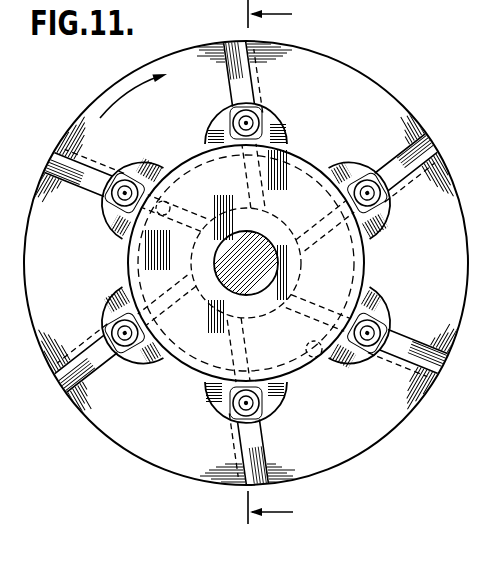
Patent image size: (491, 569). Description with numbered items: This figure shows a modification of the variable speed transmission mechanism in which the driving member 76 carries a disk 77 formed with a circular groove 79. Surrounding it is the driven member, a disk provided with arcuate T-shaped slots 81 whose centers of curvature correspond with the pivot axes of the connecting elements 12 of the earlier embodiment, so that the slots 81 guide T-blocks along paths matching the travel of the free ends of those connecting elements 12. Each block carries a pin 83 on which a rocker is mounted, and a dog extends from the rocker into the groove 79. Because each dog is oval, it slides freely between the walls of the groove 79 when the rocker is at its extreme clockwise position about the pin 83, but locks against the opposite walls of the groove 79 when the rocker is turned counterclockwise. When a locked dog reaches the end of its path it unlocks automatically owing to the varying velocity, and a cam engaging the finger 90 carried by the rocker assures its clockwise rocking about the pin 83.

The connecting elements 12 is at (257, 262).
The driving member 76 is at (273, 257).
The disk 77 is at (364, 272).
The groove 79 is at (318, 360).
The slots 81 is at (226, 41).
The pin 83 is at (250, 115).
The finger 90 is at (214, 138).